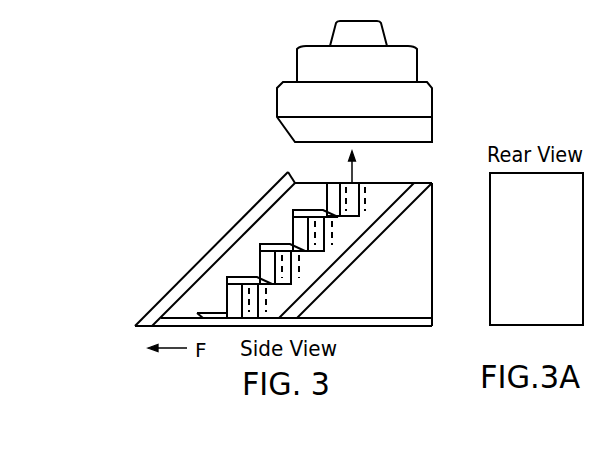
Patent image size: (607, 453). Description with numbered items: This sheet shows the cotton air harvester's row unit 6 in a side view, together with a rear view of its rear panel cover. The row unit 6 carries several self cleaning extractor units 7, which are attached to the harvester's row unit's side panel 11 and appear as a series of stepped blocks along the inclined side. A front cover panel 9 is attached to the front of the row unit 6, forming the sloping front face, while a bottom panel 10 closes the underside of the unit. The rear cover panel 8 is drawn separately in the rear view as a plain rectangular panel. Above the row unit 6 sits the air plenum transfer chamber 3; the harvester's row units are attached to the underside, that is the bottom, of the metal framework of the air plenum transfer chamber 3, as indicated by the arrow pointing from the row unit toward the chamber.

In FIG. 3, the air plenum transfer chamber 3 is at (298, 99).
In FIG. 3, the row unit 6 is at (170, 263).
In FIG. 3, the self cleaning extractor units 7 is at (353, 236).
In FIG. 3A, the self cleaning extractor units 7 is at (586, 180).
In FIG. 3A, the rear cover panel 8 is at (481, 202).
In FIG. 3, the front cover panel 9 is at (228, 220).
In FIG. 3, the bottom panel 10 is at (389, 337).
In FIG. 3, the side panel 11 is at (405, 294).